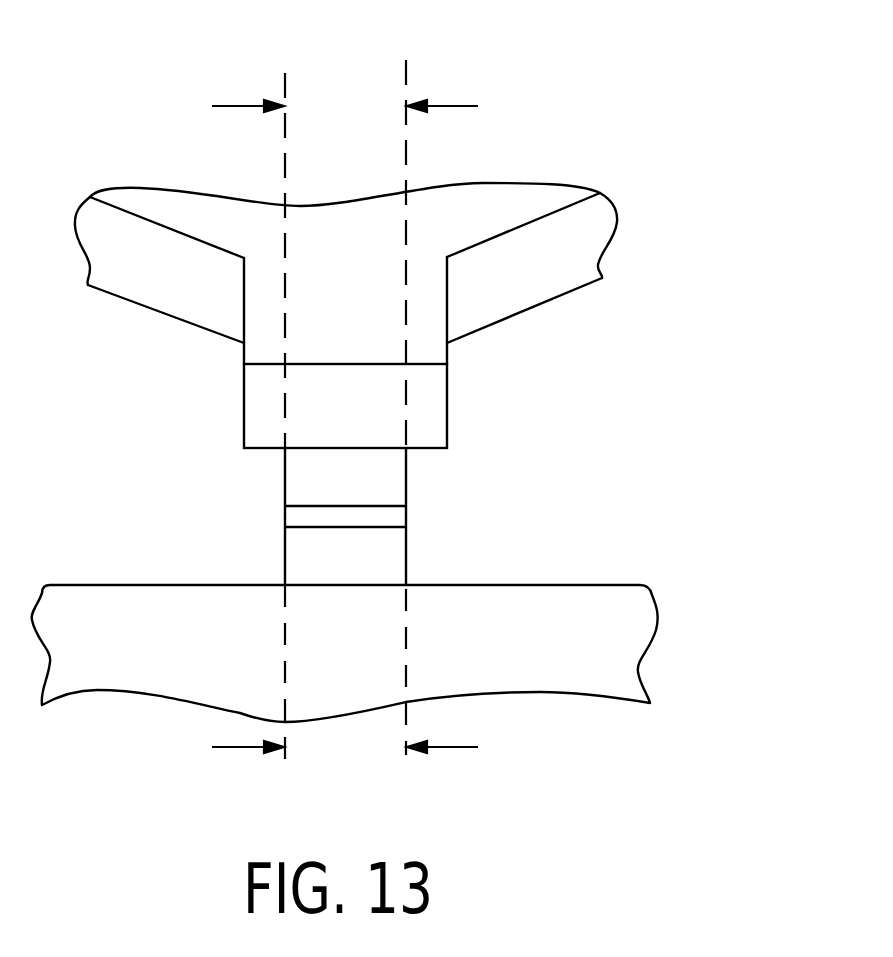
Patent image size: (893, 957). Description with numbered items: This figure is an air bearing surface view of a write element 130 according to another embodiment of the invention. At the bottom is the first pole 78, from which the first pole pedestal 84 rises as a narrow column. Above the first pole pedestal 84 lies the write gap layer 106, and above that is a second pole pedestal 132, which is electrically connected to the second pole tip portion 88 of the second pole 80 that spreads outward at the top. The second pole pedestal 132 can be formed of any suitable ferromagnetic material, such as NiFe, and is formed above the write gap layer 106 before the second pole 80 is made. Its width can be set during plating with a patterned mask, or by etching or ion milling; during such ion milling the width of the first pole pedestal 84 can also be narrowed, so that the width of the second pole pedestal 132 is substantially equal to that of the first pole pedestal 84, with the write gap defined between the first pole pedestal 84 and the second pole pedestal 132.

The write element 130 is at (668, 87).
The second pole 80 is at (535, 285).
The second pole tip portion 88 is at (267, 401).
The second pole pedestal 132 is at (407, 485).
The write gap layer 106 is at (297, 515).
The first pole pedestal 84 is at (407, 560).
The first pole 78 is at (620, 602).